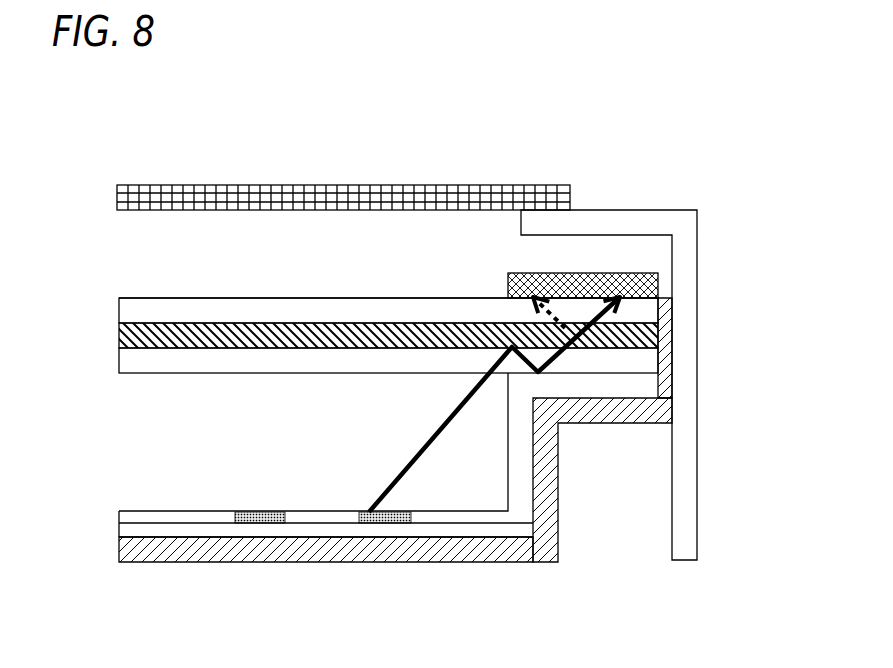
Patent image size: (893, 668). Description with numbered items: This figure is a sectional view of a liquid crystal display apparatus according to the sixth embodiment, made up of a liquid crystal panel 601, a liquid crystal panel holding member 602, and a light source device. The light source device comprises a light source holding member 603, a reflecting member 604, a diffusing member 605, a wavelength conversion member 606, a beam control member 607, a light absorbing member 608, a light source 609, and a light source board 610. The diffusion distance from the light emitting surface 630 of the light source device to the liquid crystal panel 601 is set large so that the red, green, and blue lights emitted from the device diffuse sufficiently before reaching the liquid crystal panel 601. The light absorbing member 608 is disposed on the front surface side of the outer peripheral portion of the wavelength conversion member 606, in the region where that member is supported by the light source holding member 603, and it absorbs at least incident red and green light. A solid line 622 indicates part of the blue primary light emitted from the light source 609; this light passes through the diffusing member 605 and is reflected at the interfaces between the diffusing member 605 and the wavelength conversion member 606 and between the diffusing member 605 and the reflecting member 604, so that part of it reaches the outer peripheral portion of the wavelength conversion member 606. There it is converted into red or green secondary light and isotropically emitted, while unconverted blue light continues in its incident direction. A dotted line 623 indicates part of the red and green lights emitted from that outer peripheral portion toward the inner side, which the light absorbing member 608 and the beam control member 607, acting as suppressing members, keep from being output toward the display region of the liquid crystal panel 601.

The liquid crystal panel 601 is at (118, 202).
The liquid crystal panel holding member 602 is at (697, 537).
The light source holding member 603 is at (118, 545).
The reflecting member 604 is at (131, 511).
The diffusing member 605 is at (118, 358).
The wavelength conversion member 606 is at (118, 337).
The beam control member 607 is at (118, 312).
The light absorbing member 608 is at (659, 287).
The light source 609 is at (398, 523).
The light source board 610 is at (118, 530).
The solid line 622 is at (433, 433).
The dotted line 623 is at (562, 327).
The light emitting surface 630 is at (158, 298).